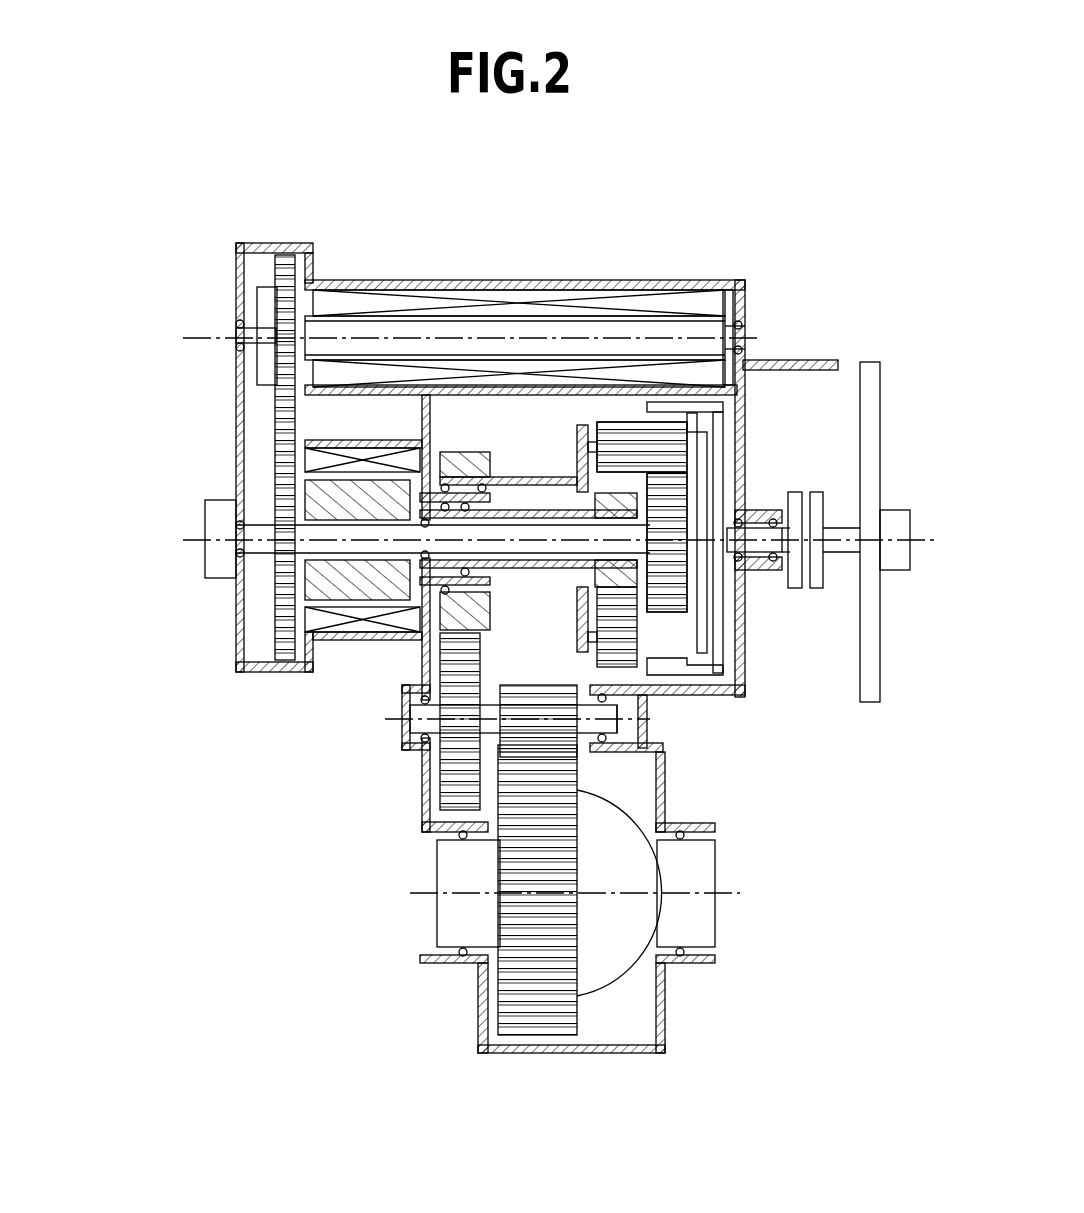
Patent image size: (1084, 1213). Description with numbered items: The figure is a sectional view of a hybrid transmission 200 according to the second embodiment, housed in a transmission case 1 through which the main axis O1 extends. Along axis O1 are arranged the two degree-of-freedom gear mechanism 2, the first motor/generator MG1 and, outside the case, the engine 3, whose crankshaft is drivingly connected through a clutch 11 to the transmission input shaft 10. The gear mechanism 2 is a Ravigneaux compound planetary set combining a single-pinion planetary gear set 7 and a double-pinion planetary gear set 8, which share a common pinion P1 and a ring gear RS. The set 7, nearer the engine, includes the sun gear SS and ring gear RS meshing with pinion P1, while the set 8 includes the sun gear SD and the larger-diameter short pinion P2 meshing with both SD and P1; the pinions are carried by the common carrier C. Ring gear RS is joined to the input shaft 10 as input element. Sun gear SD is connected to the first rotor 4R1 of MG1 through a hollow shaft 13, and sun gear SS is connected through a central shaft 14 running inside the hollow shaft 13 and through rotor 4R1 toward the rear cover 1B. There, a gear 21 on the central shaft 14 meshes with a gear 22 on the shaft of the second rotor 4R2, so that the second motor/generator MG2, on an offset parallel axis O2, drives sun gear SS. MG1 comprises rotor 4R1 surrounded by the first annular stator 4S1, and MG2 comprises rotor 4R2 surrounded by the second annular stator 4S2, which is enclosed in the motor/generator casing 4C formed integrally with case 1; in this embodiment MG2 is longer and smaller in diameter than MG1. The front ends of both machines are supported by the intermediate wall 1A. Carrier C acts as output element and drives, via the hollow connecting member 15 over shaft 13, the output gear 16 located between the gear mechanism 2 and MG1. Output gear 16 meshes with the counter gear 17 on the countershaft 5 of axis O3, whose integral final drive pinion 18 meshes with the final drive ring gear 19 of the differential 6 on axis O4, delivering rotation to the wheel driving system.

The hybrid transmission 200 is at (588, 252).
The transmission case 1 is at (541, 383).
The intermediate wall 1A is at (423, 412).
The rear cover 1B is at (240, 402).
The motor/generator casing 4C is at (445, 281).
The two degree-of-freedom gear mechanism 2 is at (702, 240).
The single-pinion planetary gear set 7 is at (676, 390).
The double-pinion planetary gear set 8 is at (612, 418).
The second motor/generator MG2 is at (157, 250).
The second annular stator 4S2 is at (315, 300).
The second rotor 4R2 is at (315, 330).
The gear 22 is at (262, 372).
The gear 21 is at (270, 442).
The first motor/generator MG1 is at (155, 445).
The first annular stator 4S1 is at (315, 462).
The first rotor 4R1 is at (315, 500).
The central shaft 14 is at (515, 537).
The output gear 16 is at (462, 452).
The hollow connecting member 15 is at (505, 477).
The hollow shaft 13 is at (558, 508).
The common pinion P1 is at (675, 470).
The short pinion P2 is at (600, 652).
The sun gear SS is at (670, 495).
The ring gear RS is at (680, 408).
The carrier C is at (700, 612).
The sun gear SD is at (582, 621).
The axis O2 is at (752, 337).
The transmission input shaft 10 is at (768, 530).
The clutch 11 is at (805, 490).
The axis O1 is at (918, 538).
The engine 3 is at (898, 570).
The counter gear 17 is at (445, 650).
The axis O3 is at (393, 720).
The countershaft 5 is at (617, 705).
The final drive pinion 18 is at (563, 727).
The final drive ring gear 19 is at (563, 780).
The differential 6 is at (632, 798).
The axis O4 is at (412, 893).